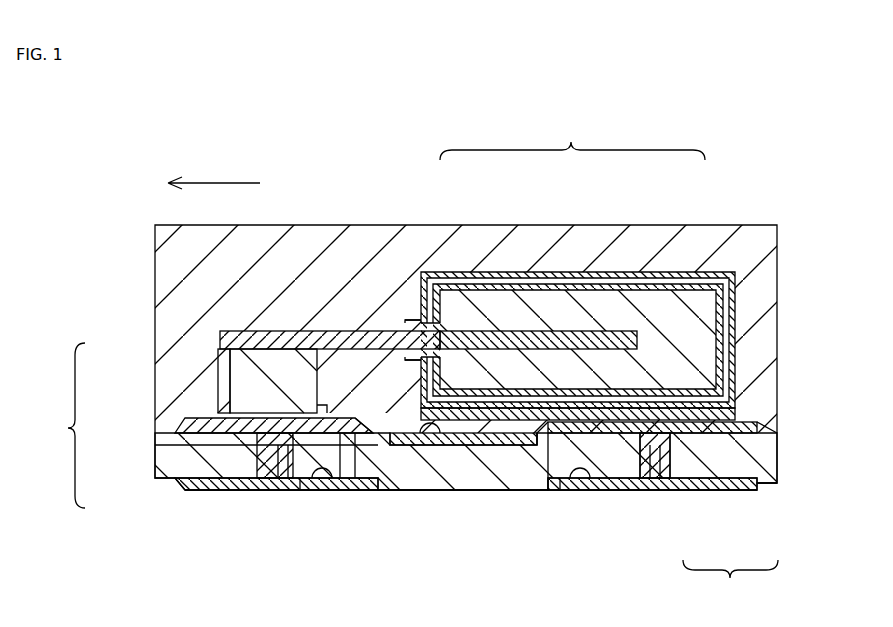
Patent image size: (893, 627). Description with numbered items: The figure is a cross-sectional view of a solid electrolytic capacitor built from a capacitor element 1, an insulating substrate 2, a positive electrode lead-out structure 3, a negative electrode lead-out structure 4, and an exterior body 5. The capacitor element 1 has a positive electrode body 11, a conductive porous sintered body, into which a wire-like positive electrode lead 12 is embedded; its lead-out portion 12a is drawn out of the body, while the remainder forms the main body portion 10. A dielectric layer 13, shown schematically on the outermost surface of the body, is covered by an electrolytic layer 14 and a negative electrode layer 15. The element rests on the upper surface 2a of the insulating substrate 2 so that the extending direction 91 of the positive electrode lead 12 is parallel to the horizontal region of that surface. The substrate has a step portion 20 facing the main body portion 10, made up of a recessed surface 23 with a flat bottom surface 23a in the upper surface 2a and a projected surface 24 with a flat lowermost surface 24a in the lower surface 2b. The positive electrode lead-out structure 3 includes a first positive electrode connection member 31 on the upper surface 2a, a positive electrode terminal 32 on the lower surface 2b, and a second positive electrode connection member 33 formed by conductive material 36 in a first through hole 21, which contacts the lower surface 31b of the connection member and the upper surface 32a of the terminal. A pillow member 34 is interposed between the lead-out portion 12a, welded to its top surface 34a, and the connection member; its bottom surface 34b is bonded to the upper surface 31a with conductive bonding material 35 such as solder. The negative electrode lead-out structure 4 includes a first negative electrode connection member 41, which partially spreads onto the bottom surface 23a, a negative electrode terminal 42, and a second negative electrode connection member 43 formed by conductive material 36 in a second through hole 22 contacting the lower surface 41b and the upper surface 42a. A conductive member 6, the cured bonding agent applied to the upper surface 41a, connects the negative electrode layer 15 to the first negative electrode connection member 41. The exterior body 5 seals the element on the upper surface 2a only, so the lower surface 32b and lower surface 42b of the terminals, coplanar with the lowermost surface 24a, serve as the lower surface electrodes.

The capacitor element 1 is at (545, 260).
The insulating substrate 2 is at (779, 452).
The upper surface 2a is at (774, 427).
The lower surface 2b is at (762, 490).
The positive electrode lead-out structure 3 is at (246, 429).
The negative electrode lead-out structure 4 is at (599, 477).
The exterior body 5 is at (366, 258).
The conductive member 6 is at (500, 470).
The main body portion 10 is at (742, 265).
The positive electrode body 11 is at (463, 318).
The positive electrode lead 12 is at (522, 332).
The lead-out portion 12a is at (336, 345).
The dielectric layer 13 is at (582, 288).
The electrolytic layer 14 is at (630, 282).
The negative electrode layer 15 is at (678, 275).
The step portion 20 is at (478, 490).
The first through hole 21 is at (240, 492).
The second through hole 22 is at (630, 492).
The recessed surface 23 is at (432, 492).
The bottom surface 23a is at (445, 492).
The projected surface 24 is at (380, 492).
The lowermost surface 24a is at (400, 492).
The first positive electrode connection member 31 is at (240, 430).
The upper surface 31a is at (369, 414).
The lower surface 31b is at (350, 492).
The positive electrode terminal 32 is at (185, 492).
The upper surface 32a is at (328, 492).
The lower surface 32b is at (318, 492).
The second positive electrode connection member 33 is at (245, 455).
The pillow member 34 is at (235, 372).
The top surface 34a is at (270, 331).
The bottom surface 34b is at (322, 410).
The conductive bonding material 35 is at (220, 402).
The conductive material 36 is at (665, 492).
The first negative electrode connection member 41 is at (745, 492).
The upper surface 41a is at (669, 408).
The lower surface 41b is at (537, 492).
The negative electrode terminal 42 is at (722, 492).
The upper surface 42a is at (567, 492).
The lower surface 42b is at (590, 492).
The second negative electrode connection member 43 is at (690, 492).
The extending direction 91 is at (205, 172).